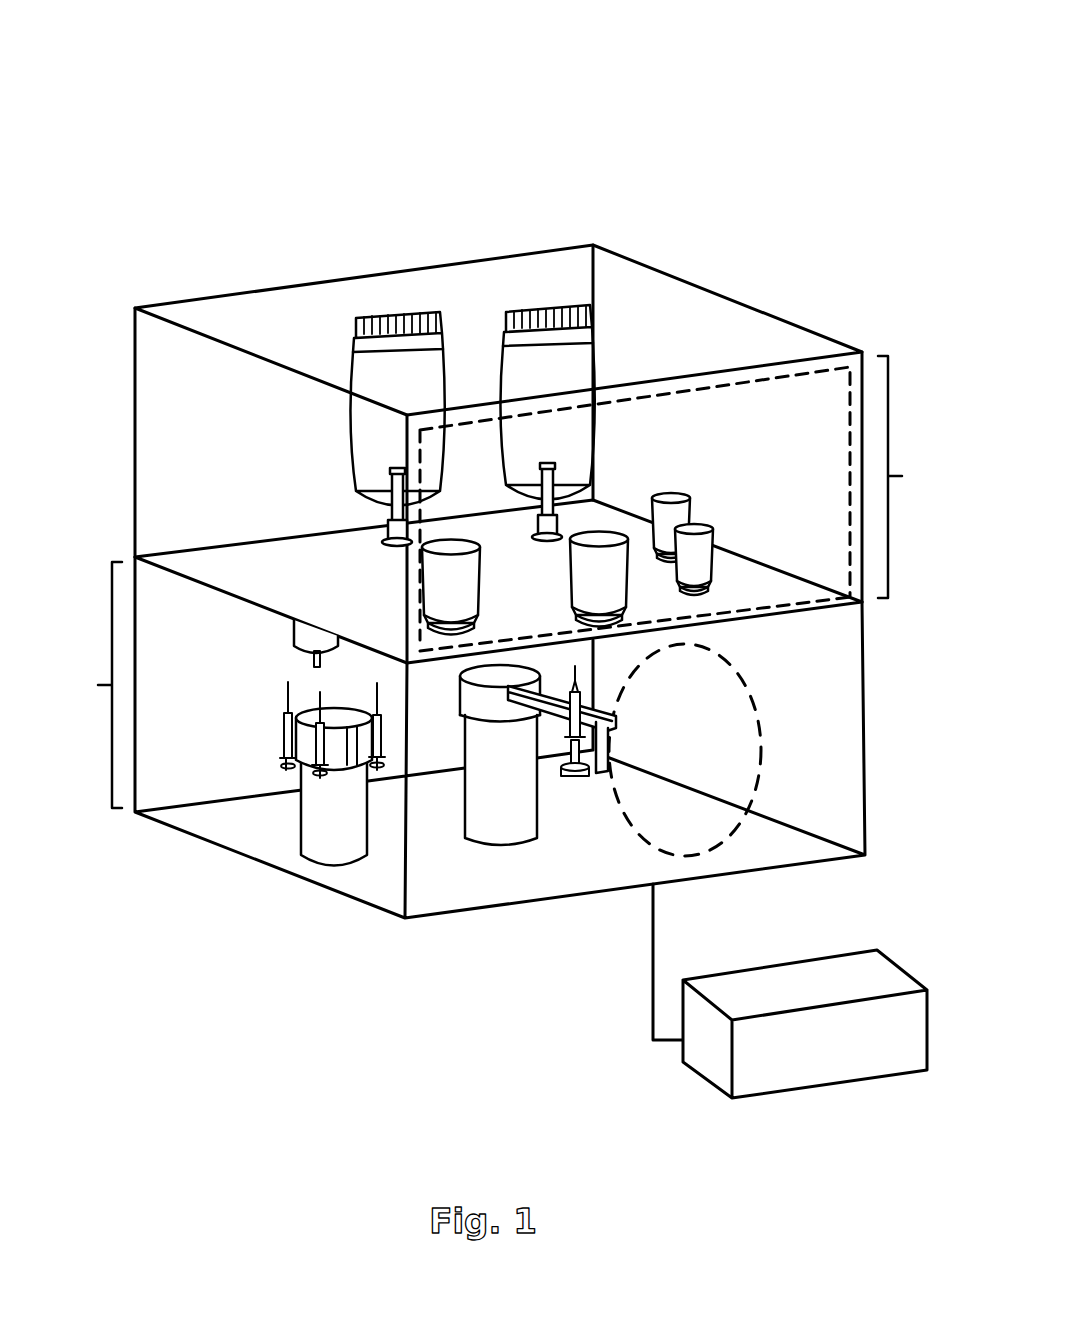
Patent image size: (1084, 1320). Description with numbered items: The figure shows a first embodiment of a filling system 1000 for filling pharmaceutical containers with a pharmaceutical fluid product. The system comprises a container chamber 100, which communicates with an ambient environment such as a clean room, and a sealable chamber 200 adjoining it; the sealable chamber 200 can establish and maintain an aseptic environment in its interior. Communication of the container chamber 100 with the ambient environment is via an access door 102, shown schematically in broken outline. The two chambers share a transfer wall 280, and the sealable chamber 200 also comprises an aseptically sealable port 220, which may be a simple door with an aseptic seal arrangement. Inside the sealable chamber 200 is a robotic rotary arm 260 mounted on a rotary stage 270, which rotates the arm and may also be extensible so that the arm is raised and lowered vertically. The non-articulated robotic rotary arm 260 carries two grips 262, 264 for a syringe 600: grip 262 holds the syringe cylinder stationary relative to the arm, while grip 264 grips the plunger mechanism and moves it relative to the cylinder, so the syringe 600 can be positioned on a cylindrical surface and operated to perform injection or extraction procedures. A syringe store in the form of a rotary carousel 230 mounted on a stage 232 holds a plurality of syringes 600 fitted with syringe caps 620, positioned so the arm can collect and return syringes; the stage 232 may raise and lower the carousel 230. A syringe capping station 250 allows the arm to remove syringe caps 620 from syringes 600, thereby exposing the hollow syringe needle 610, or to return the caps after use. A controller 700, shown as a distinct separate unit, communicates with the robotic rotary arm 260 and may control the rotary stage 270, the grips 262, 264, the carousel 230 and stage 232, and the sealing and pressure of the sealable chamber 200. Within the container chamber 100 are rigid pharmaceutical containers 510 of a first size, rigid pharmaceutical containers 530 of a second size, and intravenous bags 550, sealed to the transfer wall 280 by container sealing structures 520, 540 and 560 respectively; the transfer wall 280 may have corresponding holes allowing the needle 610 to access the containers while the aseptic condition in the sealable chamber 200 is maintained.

The filling system 1000 is at (400, 203).
The container chamber 100 is at (547, 454).
The access door 102 is at (477, 418).
The sealable chamber 200 is at (455, 737).
The aseptically sealable port 220 is at (750, 793).
The carousel 230 is at (307, 755).
The stage 232 is at (327, 830).
The syringe capping station 250 is at (295, 641).
The robotic rotary arm 260 is at (543, 708).
The grip 262 is at (560, 722).
The grip 264 is at (573, 778).
The rotary stage 270 is at (493, 743).
The transfer wall 280 is at (610, 525).
The rigid pharmaceutical containers 510 is at (697, 520).
The container sealing structure 520 is at (712, 580).
The rigid pharmaceutical containers 530 is at (407, 617).
The container sealing structure 540 is at (433, 572).
The intravenous (IV) bags 550 is at (373, 367).
The container sealing structure 560 is at (407, 530).
The syringe 600 is at (300, 745).
The hollow syringe needle 610 is at (577, 678).
The syringe caps 620 is at (288, 695).
The controller 700 is at (807, 1045).